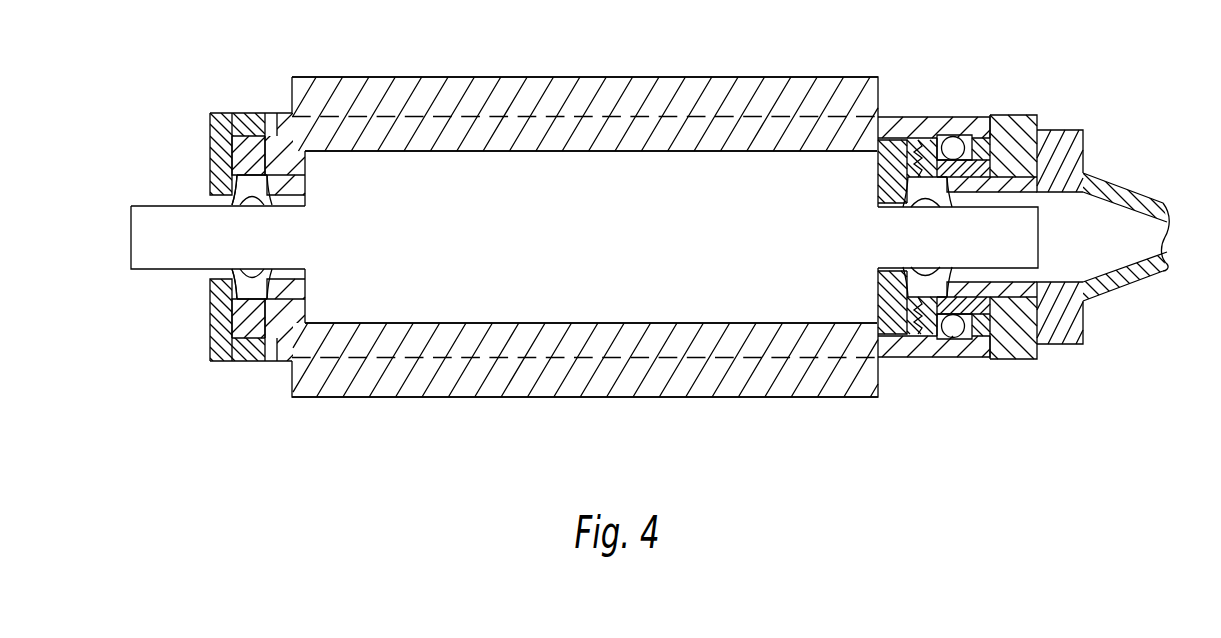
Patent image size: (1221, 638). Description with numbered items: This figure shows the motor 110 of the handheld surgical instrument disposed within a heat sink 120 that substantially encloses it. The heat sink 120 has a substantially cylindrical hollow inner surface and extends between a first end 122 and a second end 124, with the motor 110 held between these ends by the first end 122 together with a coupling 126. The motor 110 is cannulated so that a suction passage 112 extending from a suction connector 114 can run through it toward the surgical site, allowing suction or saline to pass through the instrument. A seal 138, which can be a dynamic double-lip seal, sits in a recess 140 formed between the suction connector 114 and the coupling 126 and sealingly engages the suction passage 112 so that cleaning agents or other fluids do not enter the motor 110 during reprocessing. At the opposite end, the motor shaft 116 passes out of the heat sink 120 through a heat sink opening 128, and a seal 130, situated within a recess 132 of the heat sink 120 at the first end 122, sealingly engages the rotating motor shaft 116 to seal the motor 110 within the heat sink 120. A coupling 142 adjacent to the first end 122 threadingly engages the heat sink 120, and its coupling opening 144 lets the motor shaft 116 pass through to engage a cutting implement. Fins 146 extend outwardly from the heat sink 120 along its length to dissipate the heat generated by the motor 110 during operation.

The motor 110 is at (568, 250).
The suction passage 112 is at (1035, 230).
The suction connector 114 is at (1060, 345).
The motor shaft 116 is at (178, 258).
The heat sink 120 is at (660, 140).
The first end 122 is at (287, 143).
The second end 124 is at (893, 77).
The coupling 126 is at (1020, 115).
The heat sink opening 128 is at (292, 192).
The seal 130 is at (253, 188).
The recess 132 is at (263, 113).
The seal 138 is at (928, 188).
The recess 140 is at (915, 150).
The coupling 142 is at (222, 137).
The coupling opening 144 is at (230, 193).
The fins 146 is at (493, 85).